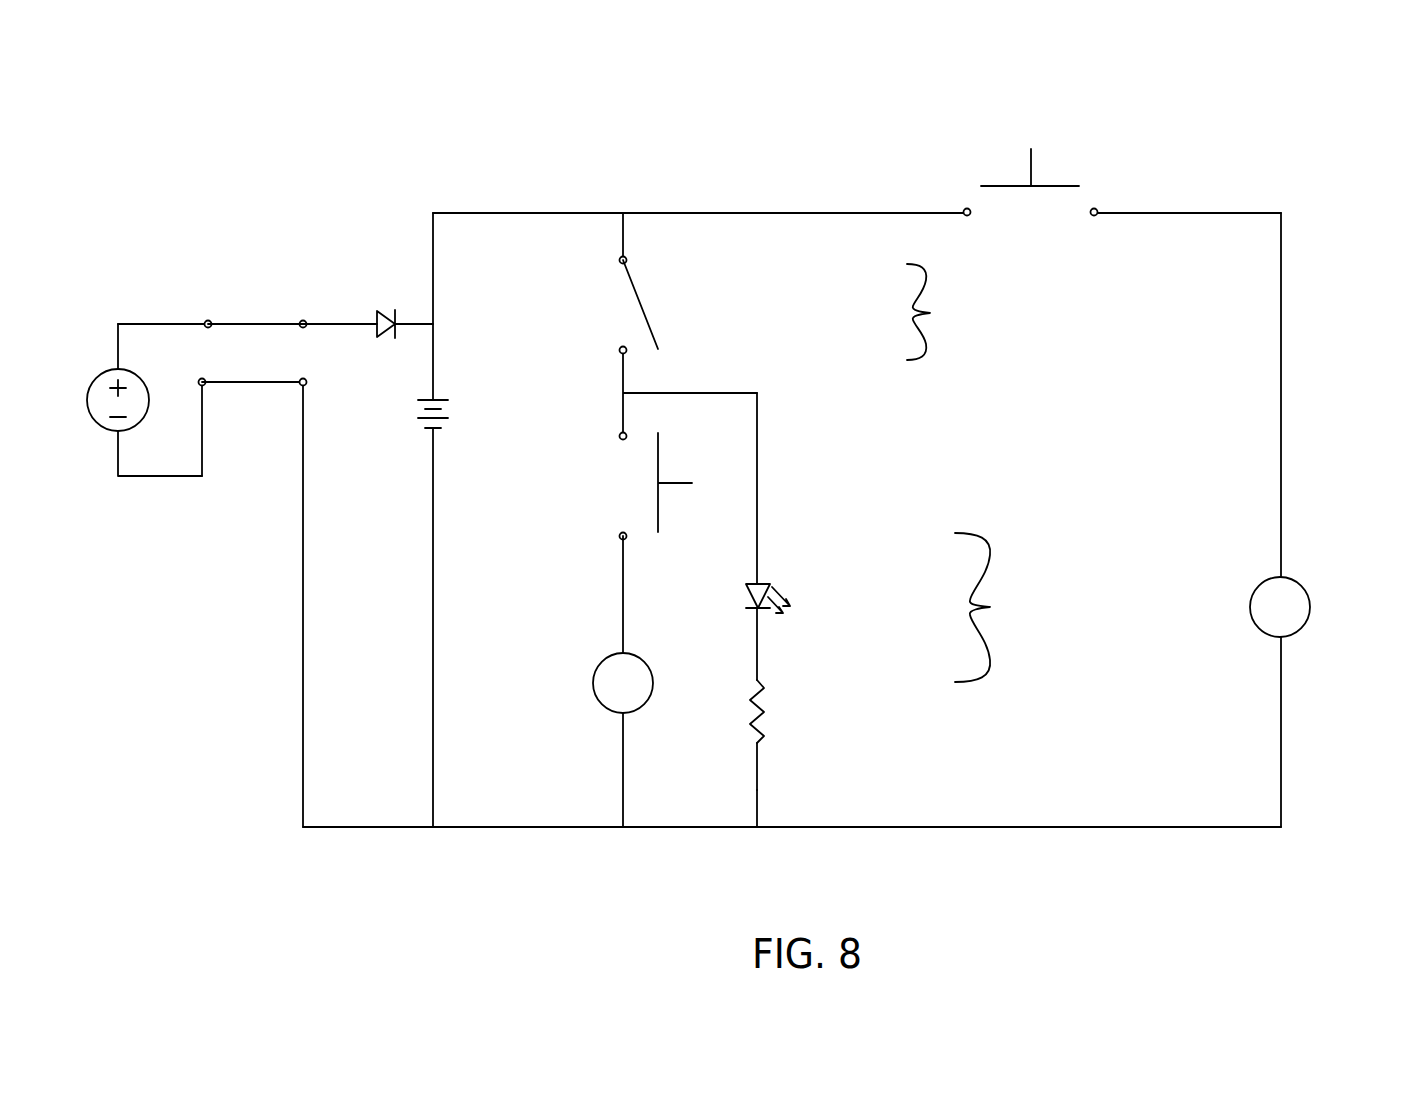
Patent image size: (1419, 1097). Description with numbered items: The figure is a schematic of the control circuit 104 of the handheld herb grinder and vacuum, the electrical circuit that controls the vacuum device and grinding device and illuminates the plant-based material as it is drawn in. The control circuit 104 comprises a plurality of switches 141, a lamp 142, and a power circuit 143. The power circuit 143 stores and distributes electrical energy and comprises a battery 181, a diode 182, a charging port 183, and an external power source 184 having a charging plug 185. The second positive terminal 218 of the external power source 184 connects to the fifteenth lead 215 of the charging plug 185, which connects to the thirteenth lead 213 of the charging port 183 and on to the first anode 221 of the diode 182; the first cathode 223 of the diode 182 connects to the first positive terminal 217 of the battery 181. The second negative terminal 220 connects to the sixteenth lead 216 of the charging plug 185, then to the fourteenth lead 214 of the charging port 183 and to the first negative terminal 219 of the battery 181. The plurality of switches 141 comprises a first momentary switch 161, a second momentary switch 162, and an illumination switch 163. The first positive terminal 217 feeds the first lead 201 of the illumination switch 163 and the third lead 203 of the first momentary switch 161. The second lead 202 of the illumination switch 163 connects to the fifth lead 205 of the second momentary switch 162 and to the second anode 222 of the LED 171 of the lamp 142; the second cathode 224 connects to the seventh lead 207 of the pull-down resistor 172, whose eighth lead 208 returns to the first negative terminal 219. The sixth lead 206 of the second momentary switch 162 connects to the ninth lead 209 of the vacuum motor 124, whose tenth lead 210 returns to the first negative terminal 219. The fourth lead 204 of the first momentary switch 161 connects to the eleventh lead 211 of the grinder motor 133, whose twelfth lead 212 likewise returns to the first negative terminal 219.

The control circuit 104 is at (302, 163).
The external power source 184 is at (117, 366).
The charging plug 185 is at (192, 322).
The second positive terminal 218 is at (121, 366).
The second negative terminal 220 is at (119, 458).
The sixteenth lead 216 is at (203, 386).
The fourteenth lead 214 is at (303, 386).
The fifteenth lead 215 is at (208, 320).
The thirteenth lead 213 is at (303, 320).
The charging port 183 is at (316, 320).
The first anode 221 is at (350, 327).
The diode 182 is at (387, 340).
The first cathode 223 is at (410, 321).
The battery 181 is at (422, 415).
The first positive terminal 217 is at (434, 382).
The first negative terminal 219 is at (434, 477).
The power circuit 143 is at (248, 702).
The third lead 203 is at (965, 208).
The fourth lead 204 is at (1096, 208).
The first momentary switch 161 is at (1012, 218).
The first lead 201 is at (619, 260).
The illumination switch 163 is at (678, 318).
The second lead 202 is at (619, 352).
The fifth lead 205 is at (619, 438).
The second momentary switch 162 is at (682, 472).
The plurality of switches 141 is at (937, 312).
The sixth lead 206 is at (619, 537).
The ninth lead 209 is at (624, 607).
The vacuum motor 124 is at (654, 692).
The tenth lead 210 is at (624, 773).
The second anode 222 is at (757, 557).
The LED 171 is at (788, 597).
The second cathode 224 is at (757, 628).
The seventh lead 207 is at (757, 665).
The pull-down resistor 172 is at (775, 718).
The eighth lead 208 is at (757, 795).
The lamp 142 is at (990, 607).
The eleventh lead 211 is at (1282, 545).
The grinder motor 133 is at (1311, 603).
The twelfth lead 212 is at (1285, 693).